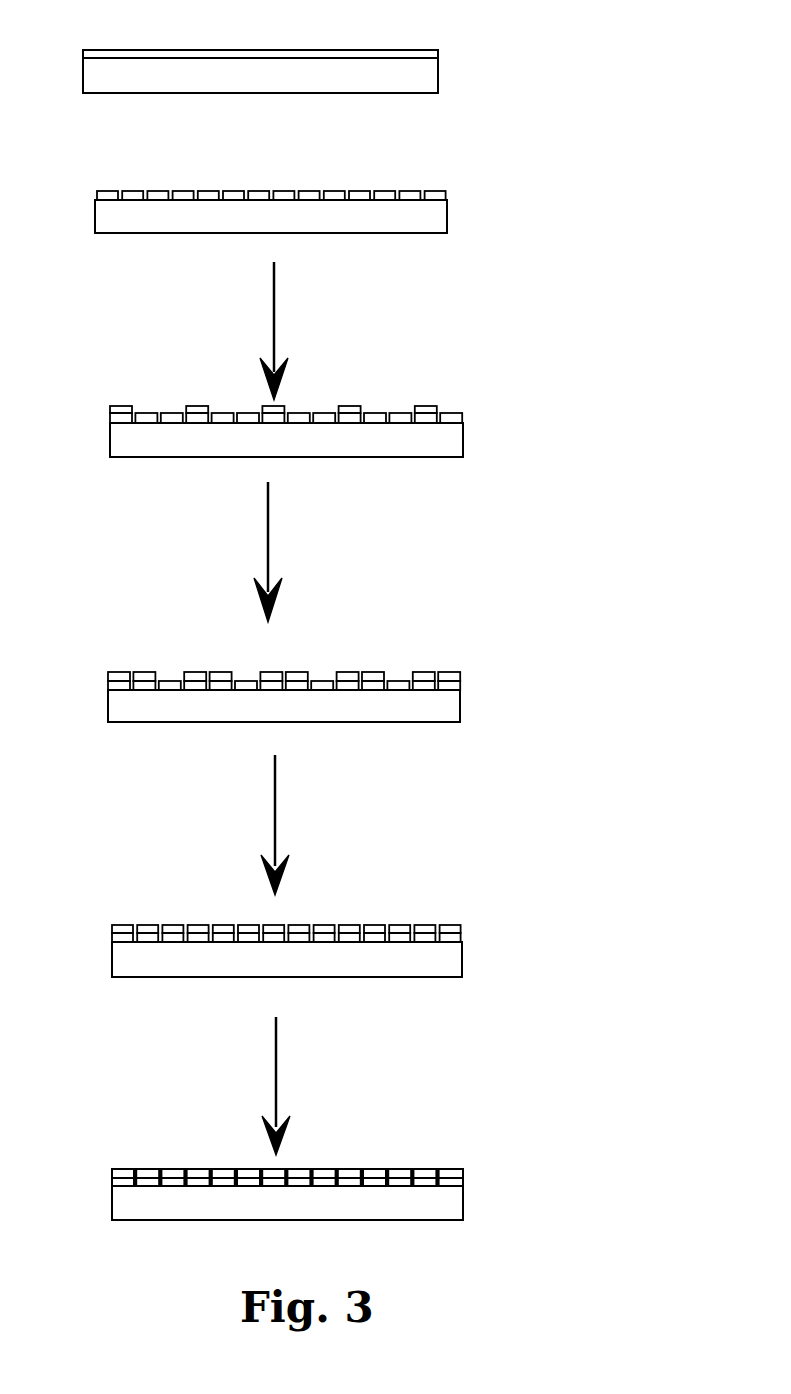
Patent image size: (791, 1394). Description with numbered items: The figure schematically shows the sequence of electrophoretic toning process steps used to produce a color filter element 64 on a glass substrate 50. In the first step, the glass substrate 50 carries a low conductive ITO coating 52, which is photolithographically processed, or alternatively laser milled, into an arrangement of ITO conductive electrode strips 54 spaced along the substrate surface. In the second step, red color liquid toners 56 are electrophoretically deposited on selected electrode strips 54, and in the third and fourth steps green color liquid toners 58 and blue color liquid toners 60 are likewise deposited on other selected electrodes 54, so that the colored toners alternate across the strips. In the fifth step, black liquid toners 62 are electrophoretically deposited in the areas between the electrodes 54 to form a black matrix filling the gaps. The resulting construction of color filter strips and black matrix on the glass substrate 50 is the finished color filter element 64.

The glass substrate 50 is at (93, 75).
The low conductive ITO coating 52 is at (98, 54).
The ITO conductive electrode strips 54 is at (98, 193).
The red color liquid toners 56 is at (277, 409).
The green color liquid toners 58 is at (288, 677).
The blue color liquid toners 60 is at (250, 927).
The black liquid toners 62 is at (137, 1169).
The color filter element 64 is at (254, 1197).